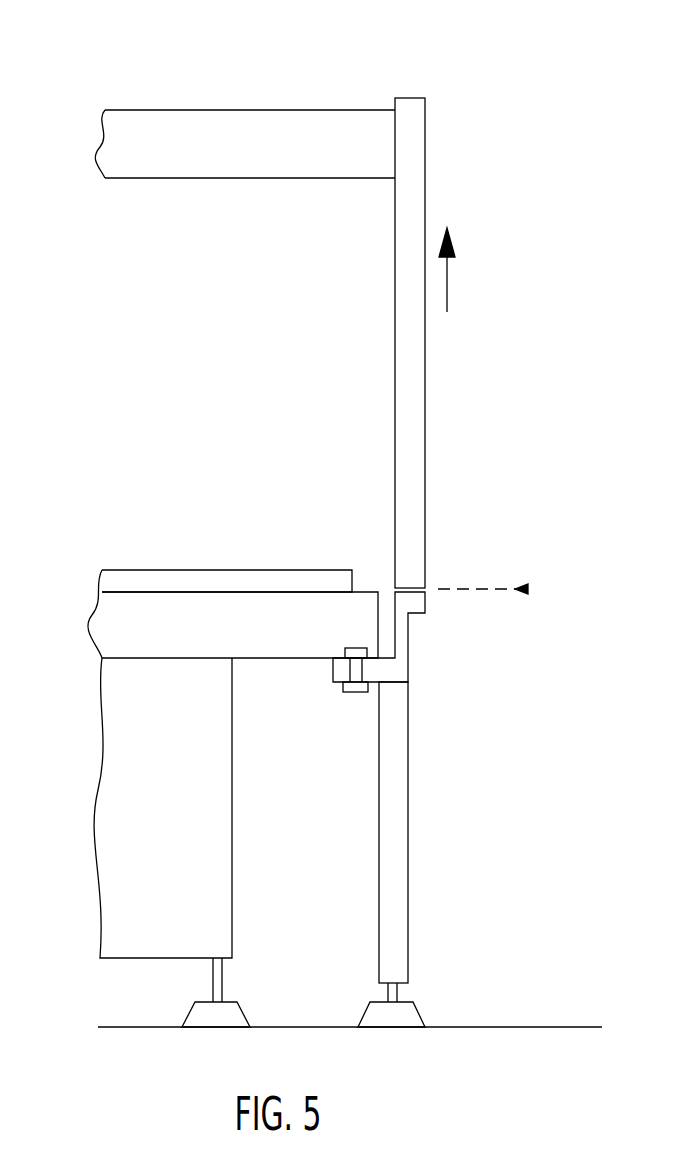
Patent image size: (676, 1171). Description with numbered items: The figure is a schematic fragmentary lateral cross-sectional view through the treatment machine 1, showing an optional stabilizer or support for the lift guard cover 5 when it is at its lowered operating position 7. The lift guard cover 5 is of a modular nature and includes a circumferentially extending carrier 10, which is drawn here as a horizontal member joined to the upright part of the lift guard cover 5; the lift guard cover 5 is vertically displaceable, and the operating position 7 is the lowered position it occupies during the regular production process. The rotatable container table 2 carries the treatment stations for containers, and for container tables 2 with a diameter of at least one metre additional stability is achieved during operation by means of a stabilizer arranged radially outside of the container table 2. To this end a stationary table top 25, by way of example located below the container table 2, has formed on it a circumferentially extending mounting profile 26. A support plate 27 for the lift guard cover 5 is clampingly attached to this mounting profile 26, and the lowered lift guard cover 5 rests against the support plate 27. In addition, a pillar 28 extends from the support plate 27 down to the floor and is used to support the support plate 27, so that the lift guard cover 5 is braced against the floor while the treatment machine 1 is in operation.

The treatment machine 1 is at (534, 63).
The carrier 10 is at (258, 130).
The lift guard cover 5 is at (417, 390).
The operating position 7 is at (527, 589).
The container table 2 is at (116, 578).
The table top 25 is at (116, 632).
The mounting profile 26 is at (350, 648).
The support plate 27 is at (402, 650).
The pillar 28 is at (400, 836).